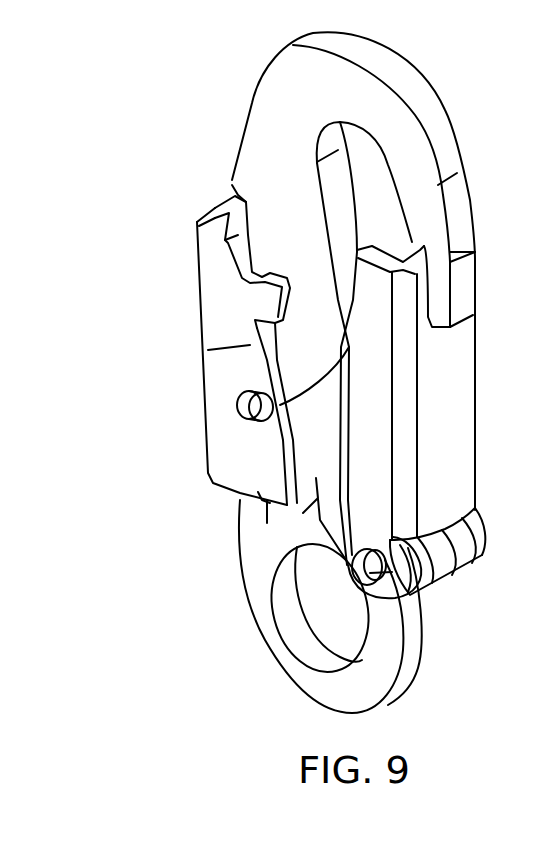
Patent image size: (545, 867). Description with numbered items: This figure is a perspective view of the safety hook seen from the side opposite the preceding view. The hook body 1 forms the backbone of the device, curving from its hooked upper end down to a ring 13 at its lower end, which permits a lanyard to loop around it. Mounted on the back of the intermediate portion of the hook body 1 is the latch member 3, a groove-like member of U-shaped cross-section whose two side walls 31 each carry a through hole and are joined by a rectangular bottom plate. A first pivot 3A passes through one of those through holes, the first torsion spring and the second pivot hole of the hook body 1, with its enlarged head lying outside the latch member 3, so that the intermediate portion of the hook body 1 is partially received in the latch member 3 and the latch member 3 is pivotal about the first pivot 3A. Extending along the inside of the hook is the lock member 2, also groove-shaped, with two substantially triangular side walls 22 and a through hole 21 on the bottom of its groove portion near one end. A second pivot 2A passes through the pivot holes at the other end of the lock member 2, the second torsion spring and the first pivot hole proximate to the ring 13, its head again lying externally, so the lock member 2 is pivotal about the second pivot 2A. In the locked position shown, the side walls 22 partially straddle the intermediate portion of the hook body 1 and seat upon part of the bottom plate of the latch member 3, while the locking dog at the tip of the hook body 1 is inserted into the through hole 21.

The hook body 1 is at (260, 107).
The lock member 2 is at (467, 447).
The through hole 21 is at (428, 320).
The second pivot 2A is at (422, 583).
The latch member 3 is at (183, 272).
The side walls 31 is at (227, 348).
The first pivot 3A is at (247, 410).
The side walls 22 is at (303, 513).
The ring 13 is at (383, 640).